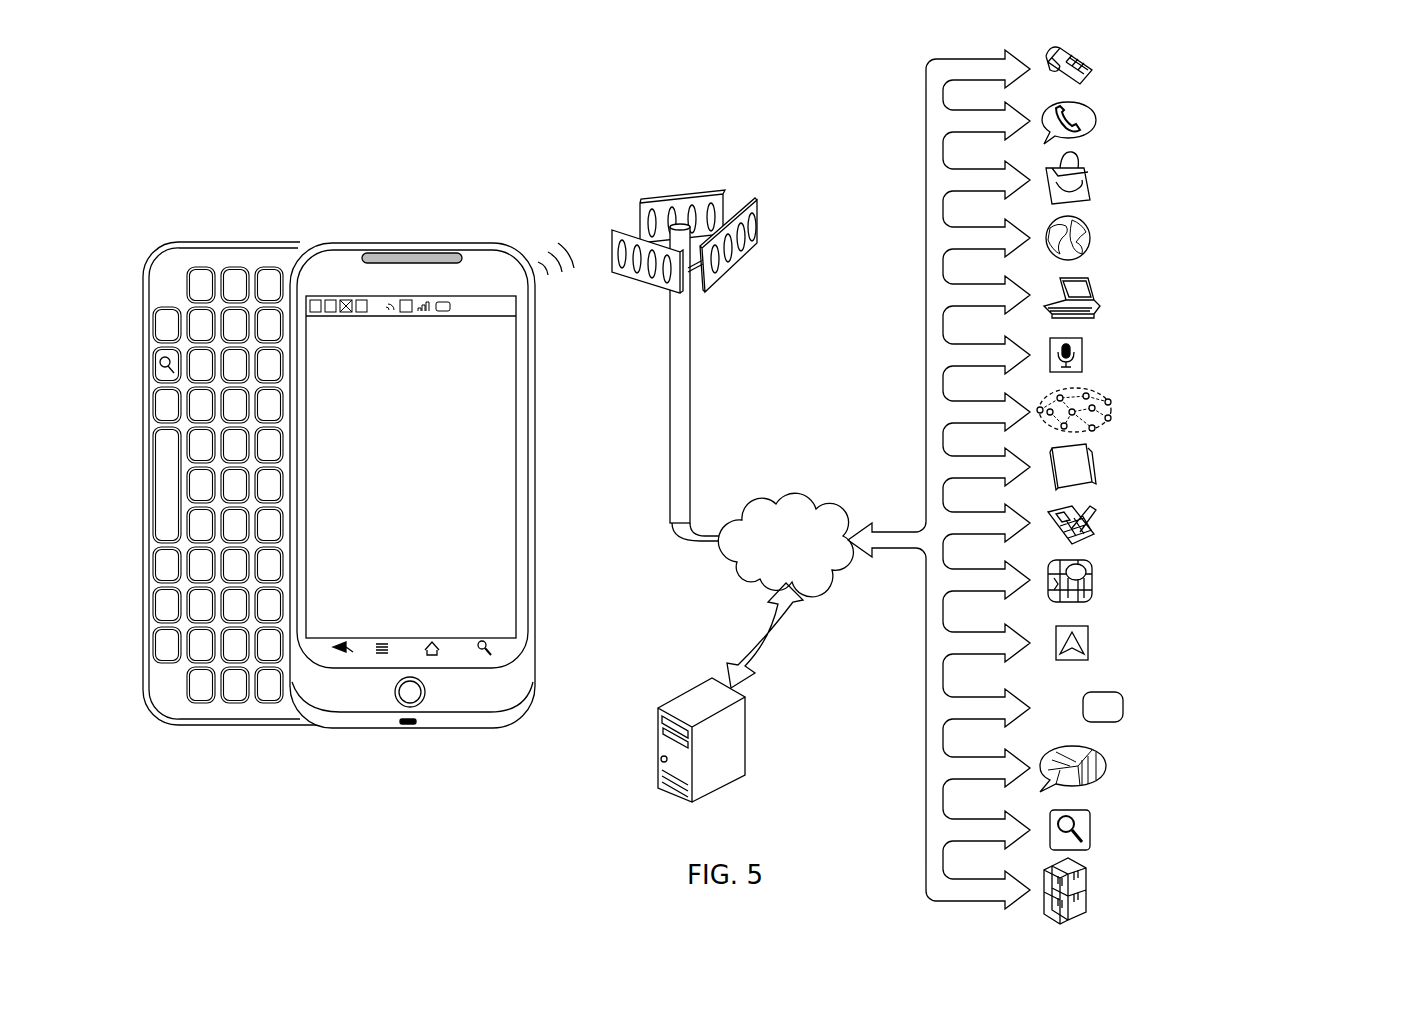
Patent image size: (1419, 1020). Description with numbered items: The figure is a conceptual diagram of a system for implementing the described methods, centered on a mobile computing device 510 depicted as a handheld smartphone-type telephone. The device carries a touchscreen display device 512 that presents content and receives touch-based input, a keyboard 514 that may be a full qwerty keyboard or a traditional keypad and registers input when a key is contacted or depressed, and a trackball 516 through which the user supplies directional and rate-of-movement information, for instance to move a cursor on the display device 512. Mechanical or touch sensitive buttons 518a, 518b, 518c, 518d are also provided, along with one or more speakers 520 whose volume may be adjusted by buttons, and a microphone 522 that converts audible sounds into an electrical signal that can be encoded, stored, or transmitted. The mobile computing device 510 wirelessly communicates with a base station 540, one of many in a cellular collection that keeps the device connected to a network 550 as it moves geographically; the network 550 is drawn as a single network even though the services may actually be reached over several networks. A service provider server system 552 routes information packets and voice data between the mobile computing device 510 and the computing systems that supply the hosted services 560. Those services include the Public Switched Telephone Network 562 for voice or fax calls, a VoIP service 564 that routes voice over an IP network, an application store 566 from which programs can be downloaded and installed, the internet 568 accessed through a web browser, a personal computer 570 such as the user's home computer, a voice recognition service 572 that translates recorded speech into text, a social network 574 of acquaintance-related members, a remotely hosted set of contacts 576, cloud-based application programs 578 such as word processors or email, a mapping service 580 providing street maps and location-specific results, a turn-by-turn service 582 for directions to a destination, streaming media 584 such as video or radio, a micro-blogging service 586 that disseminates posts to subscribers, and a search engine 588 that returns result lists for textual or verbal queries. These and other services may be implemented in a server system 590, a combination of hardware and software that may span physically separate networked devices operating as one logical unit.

The mobile computing device 510 is at (474, 174).
The touchscreen display device 512 is at (517, 477).
The keyboard 514 is at (258, 242).
The trackball 516 is at (430, 693).
The button 518a is at (342, 643).
The button 518b is at (382, 643).
The button 518c is at (432, 643).
The button 518d is at (485, 643).
The speaker 520 is at (414, 253).
The microphone 522 is at (410, 727).
The base station 540 is at (740, 163).
The network 550 is at (783, 498).
The service provider server system 552 is at (748, 740).
The hosted services 560 is at (1393, 45).
The Public Switched Telephone Network (PSTN) 562 is at (1093, 70).
The Voice over Internet Protocol (VoIP) service 564 is at (1092, 122).
The application store 566 is at (1090, 180).
The internet 568 is at (1092, 238).
The personal computer 570 is at (1092, 290).
The voice recognition service 572 is at (1090, 346).
The social network 574 is at (1106, 398).
The contacts 576 is at (1092, 470).
The cloud-based application programs 578 is at (1092, 532).
The mapping service 580 is at (1094, 580).
The turn-by-turn service 582 is at (1090, 646).
The streaming media 584 is at (1122, 700).
The micro-blogging service 586 is at (1108, 768).
The search engine 588 is at (1092, 822).
The server system 590 is at (1092, 885).